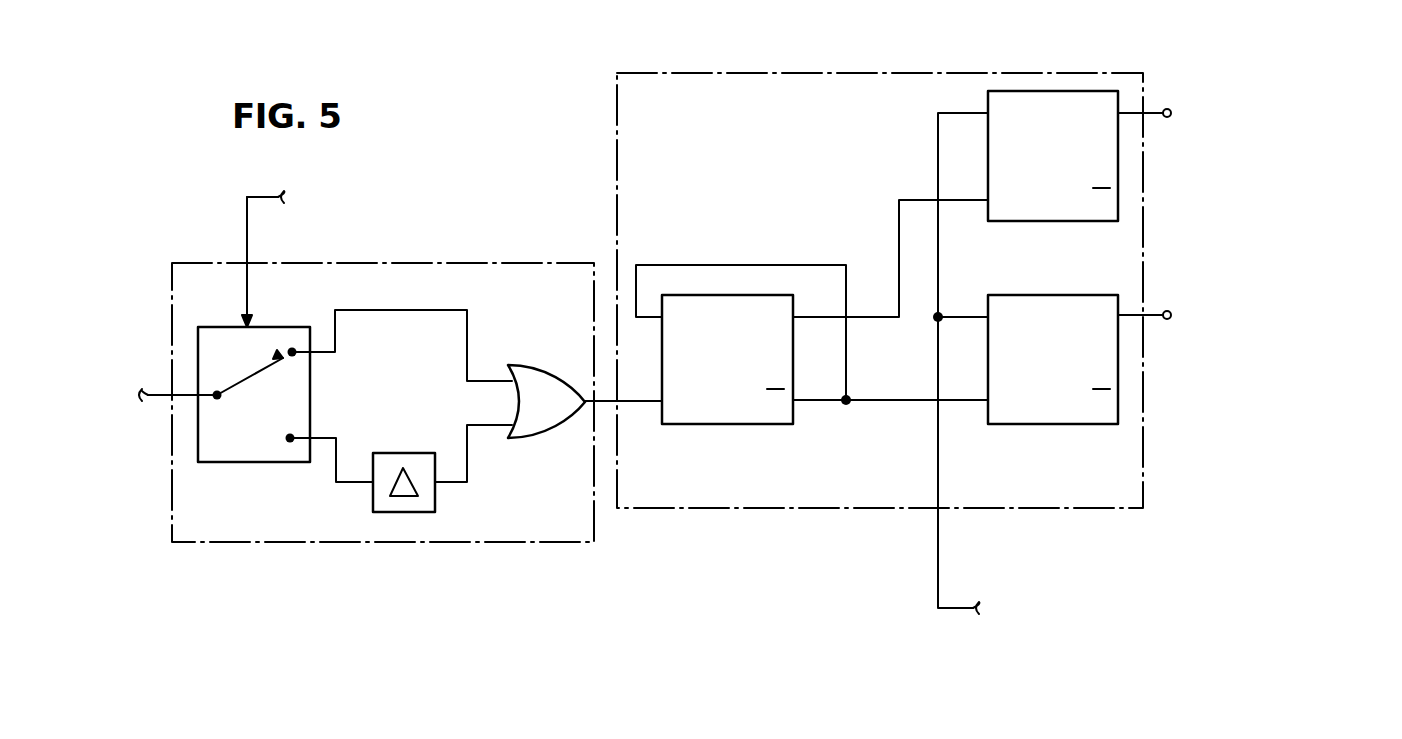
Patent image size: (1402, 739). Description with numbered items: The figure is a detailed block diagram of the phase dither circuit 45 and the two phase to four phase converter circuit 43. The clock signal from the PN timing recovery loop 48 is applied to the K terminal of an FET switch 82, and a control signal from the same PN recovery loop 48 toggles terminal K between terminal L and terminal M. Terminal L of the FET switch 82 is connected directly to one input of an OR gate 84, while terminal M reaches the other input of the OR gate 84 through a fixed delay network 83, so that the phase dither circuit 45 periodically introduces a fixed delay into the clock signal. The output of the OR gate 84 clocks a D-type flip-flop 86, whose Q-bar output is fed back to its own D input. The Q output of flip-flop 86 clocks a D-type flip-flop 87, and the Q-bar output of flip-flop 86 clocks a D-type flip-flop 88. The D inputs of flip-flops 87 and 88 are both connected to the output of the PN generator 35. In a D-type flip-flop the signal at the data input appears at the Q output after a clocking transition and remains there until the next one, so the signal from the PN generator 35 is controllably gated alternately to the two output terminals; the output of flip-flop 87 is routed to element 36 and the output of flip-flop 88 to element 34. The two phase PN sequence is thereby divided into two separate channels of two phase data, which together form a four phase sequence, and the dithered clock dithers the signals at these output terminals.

The phase dither circuit 45 is at (363, 544).
The FET switch 82 is at (256, 463).
The fixed delay network 83 is at (407, 453).
The OR gate 84 is at (540, 365).
The 20 to 40 converter circuit 43 is at (685, 515).
The D-type flip-flop 86 is at (753, 294).
The D-type flip-flop 87 is at (1038, 91).
The D-type flip-flop 88 is at (1053, 262).
The PN timing recovery loop 48 is at (318, 311).
The PN generator 35 is at (1160, 368).
The C1 destination 36 is at (1215, 117).
The B1 destination 34 is at (1218, 317).